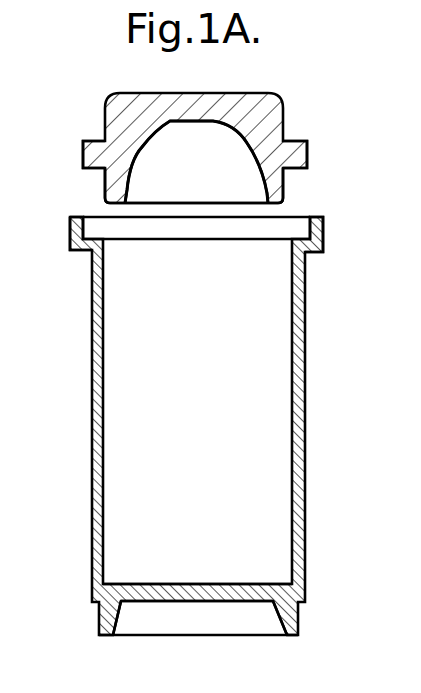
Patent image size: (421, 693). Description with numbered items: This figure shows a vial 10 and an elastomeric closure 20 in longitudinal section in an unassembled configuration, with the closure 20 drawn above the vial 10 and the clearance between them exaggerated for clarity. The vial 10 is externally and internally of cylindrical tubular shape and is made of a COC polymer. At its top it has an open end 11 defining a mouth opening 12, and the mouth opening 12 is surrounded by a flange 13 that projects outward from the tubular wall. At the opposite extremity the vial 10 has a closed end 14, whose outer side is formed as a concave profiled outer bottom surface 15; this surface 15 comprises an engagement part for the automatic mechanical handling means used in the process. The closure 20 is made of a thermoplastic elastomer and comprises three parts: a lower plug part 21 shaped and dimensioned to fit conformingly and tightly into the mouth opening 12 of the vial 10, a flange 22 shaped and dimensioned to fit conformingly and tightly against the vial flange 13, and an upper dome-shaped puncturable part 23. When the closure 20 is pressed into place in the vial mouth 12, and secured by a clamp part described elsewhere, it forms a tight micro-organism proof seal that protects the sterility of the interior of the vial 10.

The vial 10 is at (186, 421).
The open end 11 is at (118, 225).
The mouth opening 12 is at (207, 271).
The flange 13 is at (69, 236).
The closed end 14 is at (102, 593).
The concave profiled outer bottom surface 15 is at (194, 620).
The elastomeric closure 20 is at (209, 136).
The lower plug part 21 is at (281, 188).
The flange 22 is at (293, 155).
The upper dome-shaped puncturable part 23 is at (188, 107).